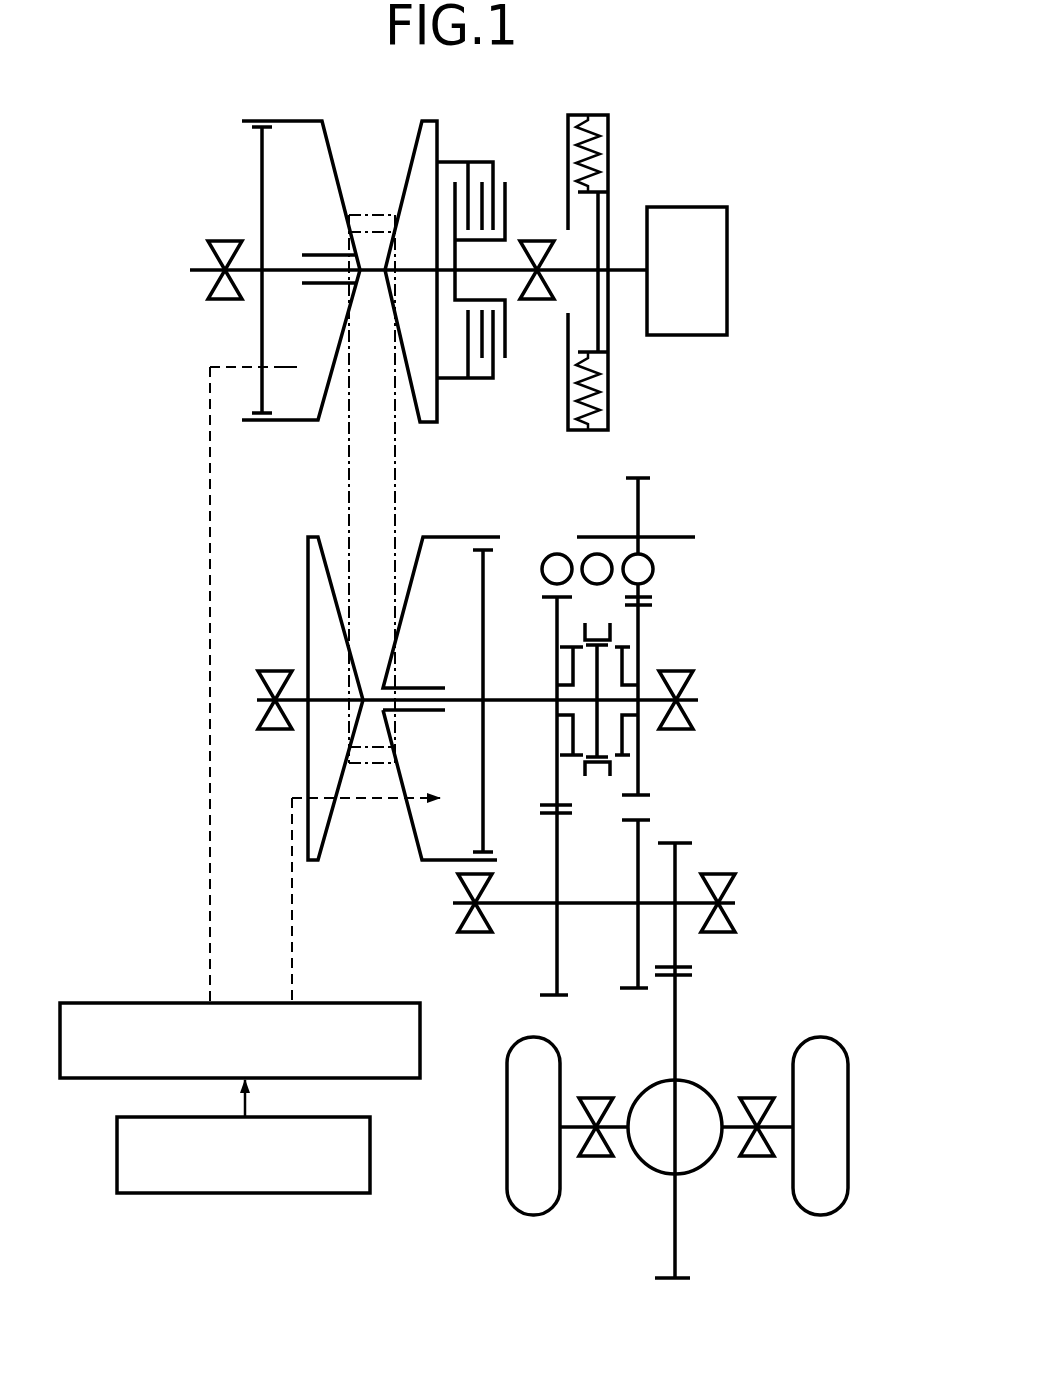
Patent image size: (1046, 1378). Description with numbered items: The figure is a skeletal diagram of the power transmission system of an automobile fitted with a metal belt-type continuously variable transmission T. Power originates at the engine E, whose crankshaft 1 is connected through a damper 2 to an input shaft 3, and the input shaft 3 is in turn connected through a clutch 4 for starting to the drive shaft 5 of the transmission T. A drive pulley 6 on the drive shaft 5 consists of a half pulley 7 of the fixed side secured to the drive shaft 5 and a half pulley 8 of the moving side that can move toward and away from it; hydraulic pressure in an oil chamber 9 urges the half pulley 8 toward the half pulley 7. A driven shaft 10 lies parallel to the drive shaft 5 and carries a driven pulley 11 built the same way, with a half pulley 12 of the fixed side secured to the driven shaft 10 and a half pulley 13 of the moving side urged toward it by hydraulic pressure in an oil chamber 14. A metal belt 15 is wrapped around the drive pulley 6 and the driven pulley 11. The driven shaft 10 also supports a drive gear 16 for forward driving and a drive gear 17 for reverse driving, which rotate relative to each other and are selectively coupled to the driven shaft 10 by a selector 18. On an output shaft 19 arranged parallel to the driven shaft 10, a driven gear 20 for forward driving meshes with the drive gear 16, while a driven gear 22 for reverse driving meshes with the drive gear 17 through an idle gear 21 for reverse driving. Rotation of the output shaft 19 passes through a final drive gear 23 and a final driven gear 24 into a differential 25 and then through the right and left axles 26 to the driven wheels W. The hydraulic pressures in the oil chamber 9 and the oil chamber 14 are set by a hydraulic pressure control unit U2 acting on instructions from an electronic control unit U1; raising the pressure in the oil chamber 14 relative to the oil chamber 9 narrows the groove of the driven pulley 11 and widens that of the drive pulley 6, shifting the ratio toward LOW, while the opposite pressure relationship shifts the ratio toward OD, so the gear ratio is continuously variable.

The crankshaft 1 is at (625, 275).
The damper 2 is at (618, 158).
The input shaft 3 is at (560, 268).
The clutch for starting 4 is at (482, 158).
The drive shaft 5 is at (280, 268).
The drive pulley 6 is at (365, 168).
The half pulley of the fixed side 7 is at (418, 165).
The half pulley of the moving side 8 is at (327, 153).
The oil chamber 9 is at (293, 344).
The driven shaft 10 is at (533, 700).
The driven pulley 11 is at (384, 846).
The half pulley of the fixed side 12 is at (310, 575).
The half pulley of the moving side 13 is at (417, 570).
The oil chamber 14 is at (429, 668).
The metal belt 15 is at (396, 492).
The drive gear for forward driving 16 is at (550, 596).
The drive gear for reverse driving 17 is at (646, 612).
The selector 18 is at (600, 778).
The output shaft 19 is at (577, 902).
The driven gear for forward driving 20 is at (559, 997).
The idle gear for reverse driving 21 is at (648, 478).
The driven gear for reverse driving 22 is at (625, 990).
The final drive gear 23 is at (680, 843).
The final driven gear 24 is at (688, 975).
The differential 25 is at (702, 1086).
The axles 26 is at (612, 1128).
The engine E is at (680, 285).
The metal belt-type continuously variable transmission T is at (298, 473).
The driven wheels W is at (522, 1182).
The electronic control unit U1 is at (269, 1136).
The hydraulic pressure control unit U2 is at (267, 722).